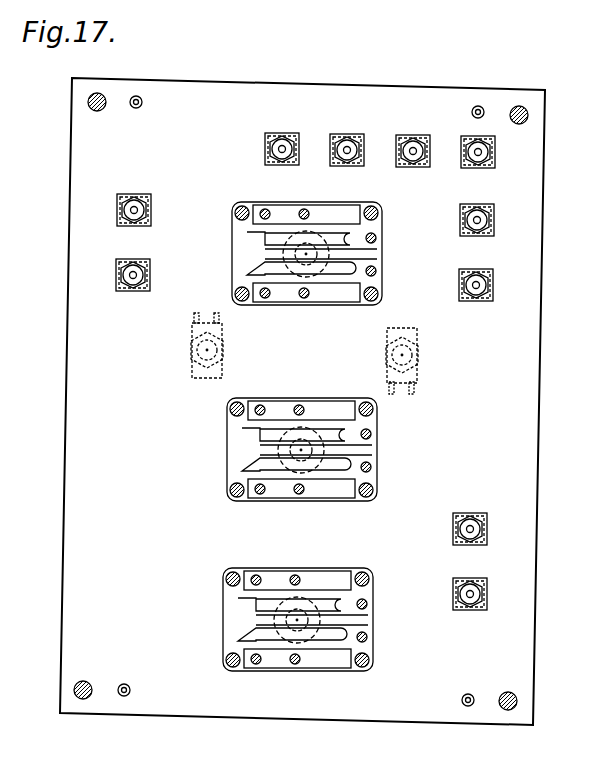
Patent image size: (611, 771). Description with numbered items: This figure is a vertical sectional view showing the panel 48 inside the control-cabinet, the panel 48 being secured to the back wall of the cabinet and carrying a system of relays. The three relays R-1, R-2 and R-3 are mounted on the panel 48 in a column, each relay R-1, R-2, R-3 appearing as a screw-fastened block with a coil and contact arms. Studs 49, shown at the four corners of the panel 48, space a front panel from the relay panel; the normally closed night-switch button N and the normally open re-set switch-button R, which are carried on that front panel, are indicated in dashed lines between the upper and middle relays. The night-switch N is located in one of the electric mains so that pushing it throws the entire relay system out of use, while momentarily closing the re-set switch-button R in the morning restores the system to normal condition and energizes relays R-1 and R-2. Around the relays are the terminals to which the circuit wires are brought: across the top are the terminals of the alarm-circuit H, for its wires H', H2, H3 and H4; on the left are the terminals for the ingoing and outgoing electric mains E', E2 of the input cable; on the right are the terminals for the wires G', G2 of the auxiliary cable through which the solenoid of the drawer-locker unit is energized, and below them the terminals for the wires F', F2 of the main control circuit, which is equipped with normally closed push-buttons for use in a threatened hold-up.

The panel 48 is at (532, 388).
The studs 49 is at (88, 103).
The alarm-circuit H is at (372, 101).
The alarm-circuit wire H' is at (274, 108).
The alarm-circuit wire H2 is at (347, 134).
The alarm-circuit wire H3 is at (413, 135).
The alarm-circuit wire H4 is at (478, 110).
The ingoing electric main E' is at (87, 270).
The outgoing electric main E2 is at (117, 210).
The auxiliary circuit wire G' is at (522, 217).
The auxiliary circuit wire G2 is at (493, 287).
The main control circuit wire F' is at (516, 526).
The main control circuit wire F2 is at (487, 595).
The relay R-1 is at (374, 253).
The relay R-2 is at (369, 455).
The relay R-3 is at (369, 625).
The night-switch button N is at (188, 358).
The re-set switch-button R is at (416, 368).